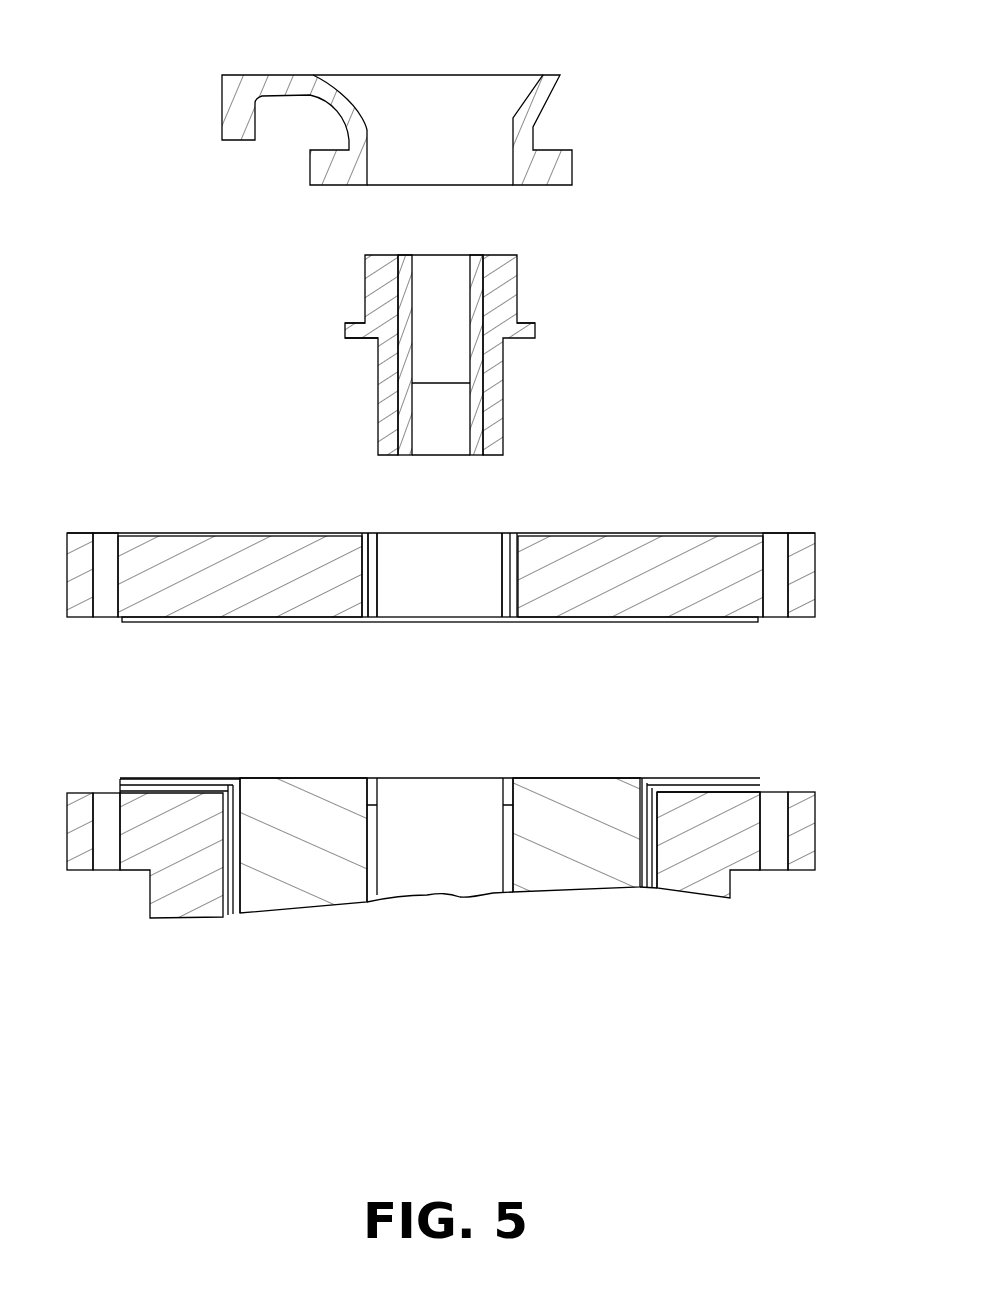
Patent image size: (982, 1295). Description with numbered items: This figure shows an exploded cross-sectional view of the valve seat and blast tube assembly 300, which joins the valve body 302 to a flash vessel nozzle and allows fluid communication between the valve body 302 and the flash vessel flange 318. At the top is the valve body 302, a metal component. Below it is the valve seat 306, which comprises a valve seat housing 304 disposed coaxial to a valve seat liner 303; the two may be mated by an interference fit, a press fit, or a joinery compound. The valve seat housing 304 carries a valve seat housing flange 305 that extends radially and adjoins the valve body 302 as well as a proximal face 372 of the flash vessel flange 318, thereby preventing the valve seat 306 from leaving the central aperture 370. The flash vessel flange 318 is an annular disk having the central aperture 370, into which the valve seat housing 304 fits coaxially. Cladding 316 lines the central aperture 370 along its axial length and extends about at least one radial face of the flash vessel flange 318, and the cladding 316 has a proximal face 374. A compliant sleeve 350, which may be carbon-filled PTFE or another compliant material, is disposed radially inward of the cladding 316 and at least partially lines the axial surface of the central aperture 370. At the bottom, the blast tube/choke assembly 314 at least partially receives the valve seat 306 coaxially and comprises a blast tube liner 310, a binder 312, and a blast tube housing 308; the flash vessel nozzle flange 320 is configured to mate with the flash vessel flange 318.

The valve seat and blast tube assembly 300 is at (115, 90).
The valve body 302 is at (545, 90).
The valve seat liner 303 is at (477, 400).
The valve seat housing 304 is at (440, 354).
The valve seat housing flange 305 is at (535, 330).
The valve seat 306 is at (328, 358).
The blast tube housing 308 is at (140, 805).
The blast tube liner 310 is at (372, 898).
The binder 312 is at (555, 880).
The blast tube/choke assembly 314 is at (660, 893).
The cladding 316 is at (520, 557).
The flash vessel flange 318 is at (175, 545).
The flash vessel nozzle flange 320 is at (745, 850).
The compliant sleeve 350 is at (375, 605).
The central aperture 370 is at (405, 537).
The proximal face 372 is at (298, 533).
The proximal face 374 is at (520, 535).